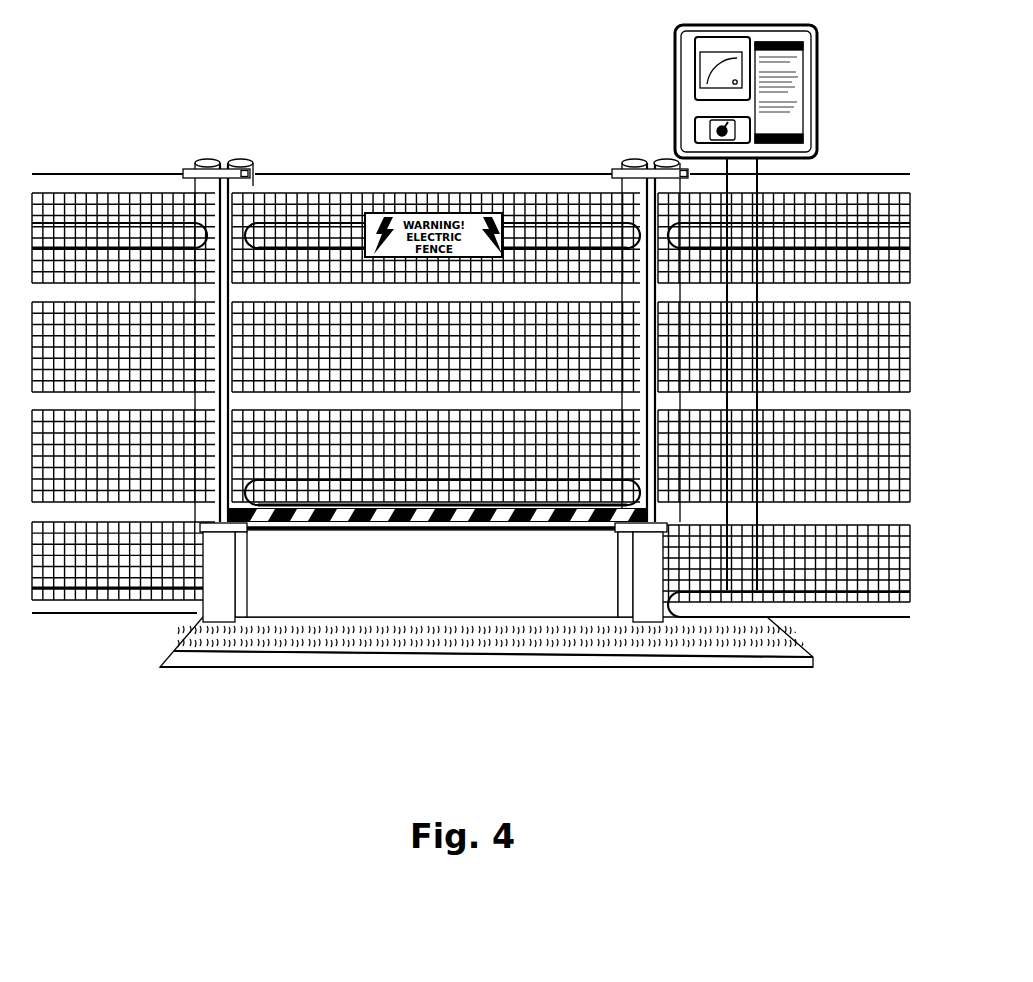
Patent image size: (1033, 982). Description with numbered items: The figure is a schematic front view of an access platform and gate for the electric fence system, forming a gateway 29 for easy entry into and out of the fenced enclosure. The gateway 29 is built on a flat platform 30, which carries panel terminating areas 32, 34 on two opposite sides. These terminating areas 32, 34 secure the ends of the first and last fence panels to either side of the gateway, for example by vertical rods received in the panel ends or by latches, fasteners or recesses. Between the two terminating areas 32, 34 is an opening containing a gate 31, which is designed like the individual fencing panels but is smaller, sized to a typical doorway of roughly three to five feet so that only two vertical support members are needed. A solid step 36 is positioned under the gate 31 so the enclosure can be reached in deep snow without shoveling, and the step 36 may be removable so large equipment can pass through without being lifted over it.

The gateway 29 is at (462, 654).
The flat platform 30 is at (238, 655).
The gate 31 is at (247, 186).
The panel terminating area 32 is at (220, 588).
The panel terminating area 34 is at (645, 603).
The solid step 36 is at (557, 590).